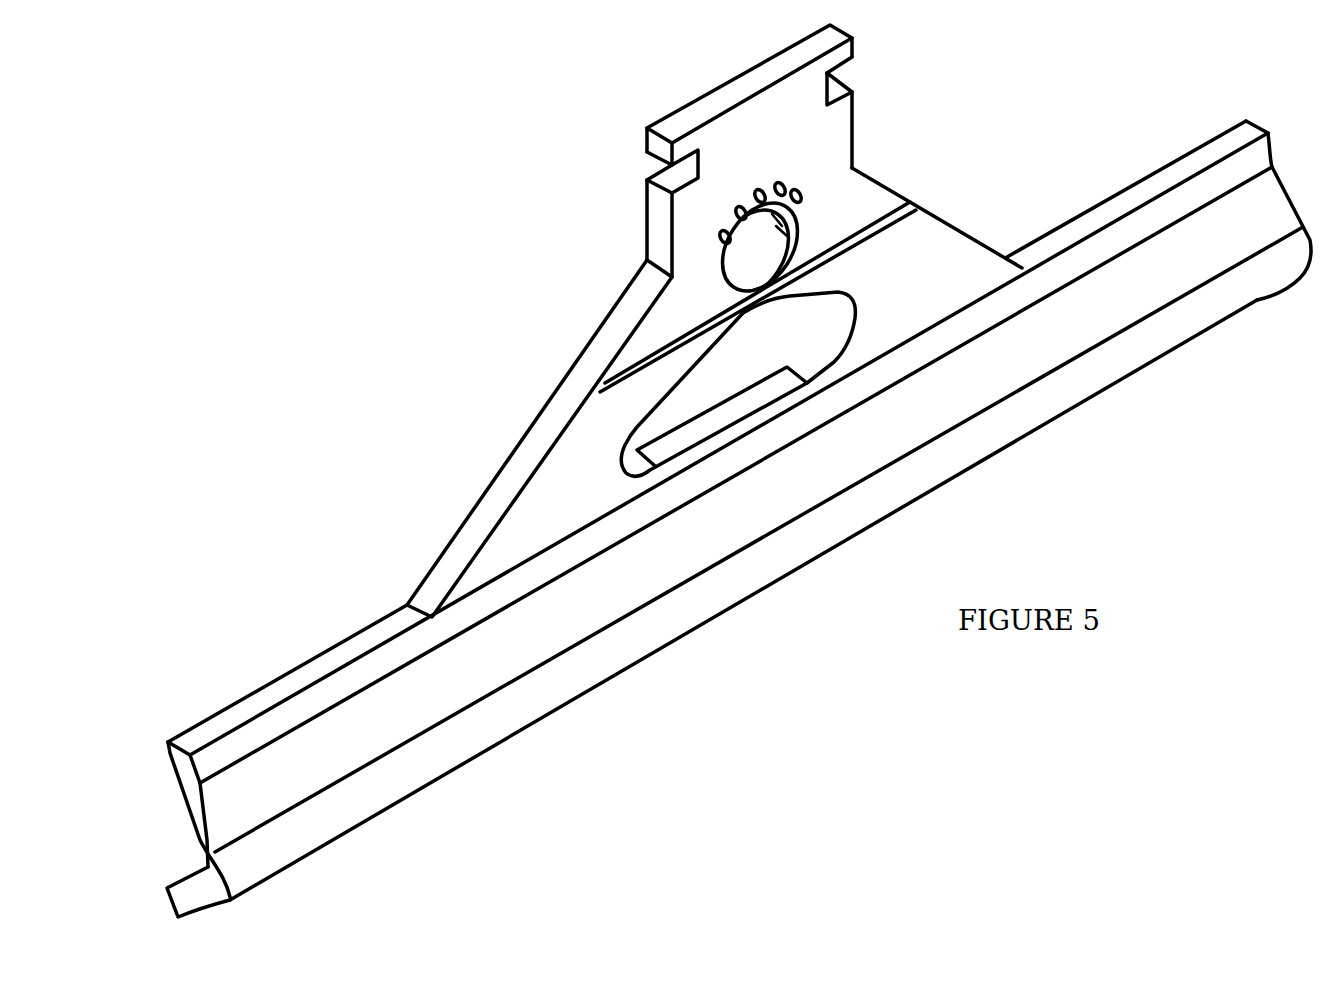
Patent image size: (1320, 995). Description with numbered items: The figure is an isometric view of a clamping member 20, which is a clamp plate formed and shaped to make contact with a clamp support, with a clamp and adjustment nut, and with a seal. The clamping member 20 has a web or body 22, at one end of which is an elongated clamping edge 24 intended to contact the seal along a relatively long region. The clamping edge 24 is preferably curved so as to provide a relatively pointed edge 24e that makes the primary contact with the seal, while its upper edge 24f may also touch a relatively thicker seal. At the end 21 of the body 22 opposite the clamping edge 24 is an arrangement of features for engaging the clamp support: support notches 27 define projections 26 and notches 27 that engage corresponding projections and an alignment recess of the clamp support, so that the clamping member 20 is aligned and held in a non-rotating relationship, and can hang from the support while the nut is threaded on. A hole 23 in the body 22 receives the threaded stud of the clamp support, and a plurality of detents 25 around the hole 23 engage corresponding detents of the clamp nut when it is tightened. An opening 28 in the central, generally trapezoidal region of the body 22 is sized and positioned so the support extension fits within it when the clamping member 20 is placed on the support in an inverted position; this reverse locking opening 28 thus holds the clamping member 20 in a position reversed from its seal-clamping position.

The clamping member 20 is at (482, 337).
The end of body 21 is at (737, 90).
The body 22 is at (642, 328).
The hole 23 is at (790, 242).
The clamping edge 24 is at (708, 519).
The pointed edge 24e is at (190, 872).
The upper edge 24f is at (170, 750).
The detents 25 is at (720, 238).
The projections 26 is at (650, 142).
The support notches 27 is at (665, 178).
The opening 28 is at (753, 393).